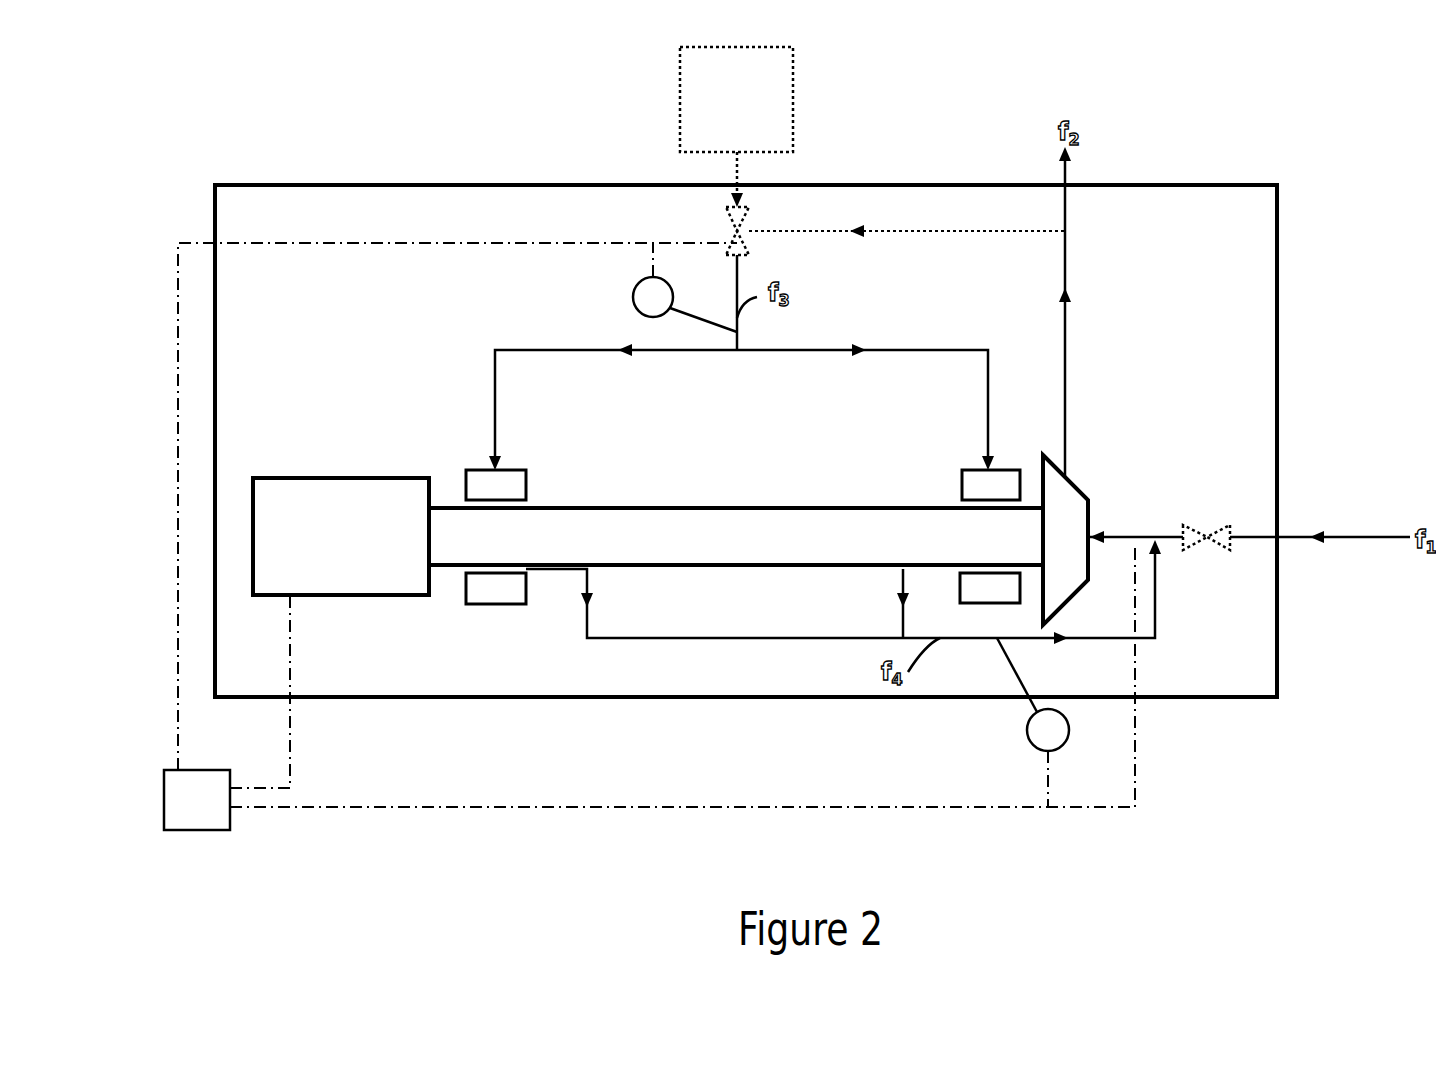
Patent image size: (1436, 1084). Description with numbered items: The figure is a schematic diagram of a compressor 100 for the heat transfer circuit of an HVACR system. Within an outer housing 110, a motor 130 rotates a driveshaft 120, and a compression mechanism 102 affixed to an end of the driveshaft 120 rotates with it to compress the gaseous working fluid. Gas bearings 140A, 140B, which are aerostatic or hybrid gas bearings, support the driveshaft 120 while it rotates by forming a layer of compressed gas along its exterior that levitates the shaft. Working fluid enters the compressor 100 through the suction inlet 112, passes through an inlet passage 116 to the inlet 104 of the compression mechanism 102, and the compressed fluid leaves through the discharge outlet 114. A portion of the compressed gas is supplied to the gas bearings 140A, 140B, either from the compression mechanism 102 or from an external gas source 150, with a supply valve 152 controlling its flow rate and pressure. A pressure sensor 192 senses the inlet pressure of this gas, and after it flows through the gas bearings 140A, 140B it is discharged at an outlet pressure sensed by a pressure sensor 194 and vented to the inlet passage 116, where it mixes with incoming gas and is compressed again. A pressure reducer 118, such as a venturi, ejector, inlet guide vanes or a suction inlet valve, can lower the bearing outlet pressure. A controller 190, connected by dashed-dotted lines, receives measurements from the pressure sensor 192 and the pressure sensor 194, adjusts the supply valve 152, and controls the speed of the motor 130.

The compressor 100 is at (170, 119).
The compression mechanism 102 is at (1091, 499).
The inlet of compression mechanism 104 is at (1092, 534).
The outer housing 110 is at (305, 185).
The suction inlet 112 is at (1277, 537).
The discharge outlet 114 is at (1070, 185).
The inlet passage 116 is at (1237, 537).
The pressure reducer 118 is at (1217, 525).
The driveshaft 120 is at (457, 505).
The motor 130 is at (345, 595).
The gas bearing 140A is at (1007, 468).
The gas bearing 140B is at (490, 604).
The external gas source 150 is at (680, 120).
The supply valve 152 is at (735, 228).
The controller 190 is at (195, 830).
The pressure sensor 192 is at (635, 292).
The pressure sensor 194 is at (1032, 745).